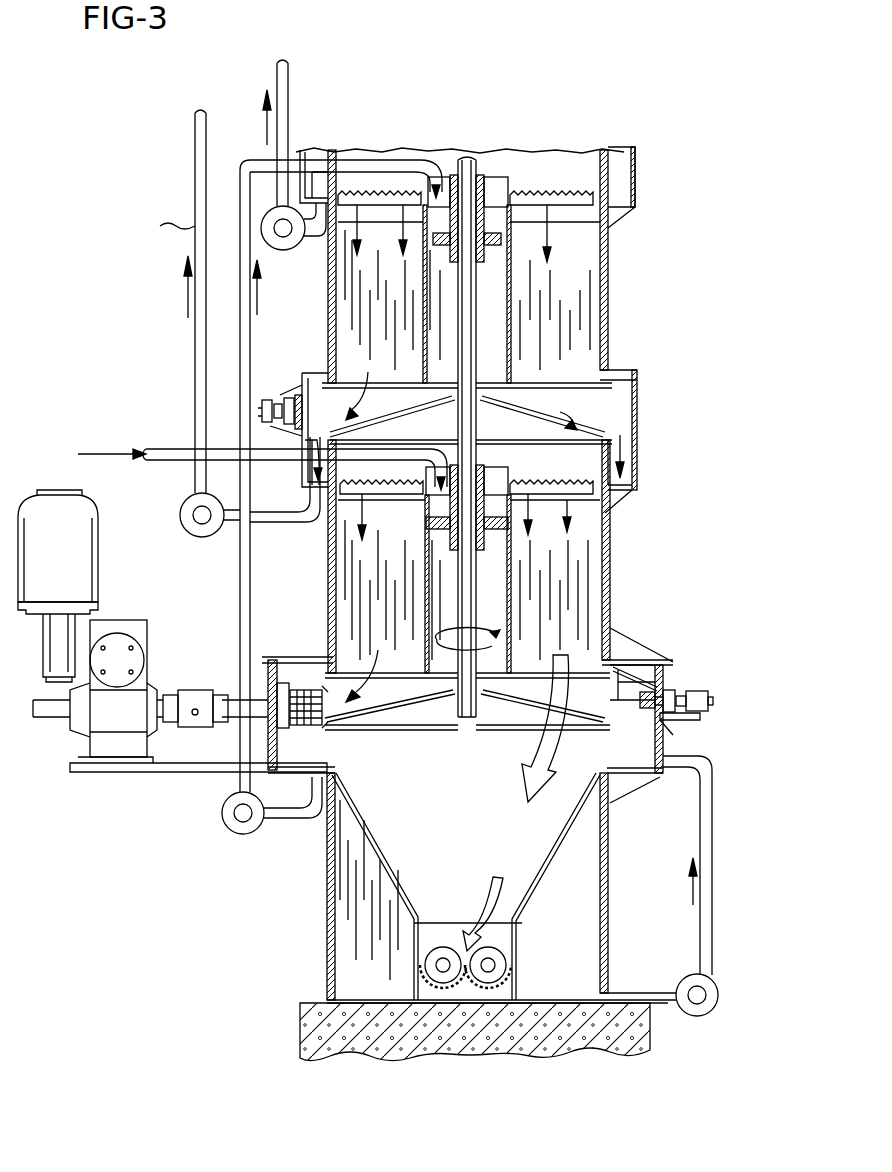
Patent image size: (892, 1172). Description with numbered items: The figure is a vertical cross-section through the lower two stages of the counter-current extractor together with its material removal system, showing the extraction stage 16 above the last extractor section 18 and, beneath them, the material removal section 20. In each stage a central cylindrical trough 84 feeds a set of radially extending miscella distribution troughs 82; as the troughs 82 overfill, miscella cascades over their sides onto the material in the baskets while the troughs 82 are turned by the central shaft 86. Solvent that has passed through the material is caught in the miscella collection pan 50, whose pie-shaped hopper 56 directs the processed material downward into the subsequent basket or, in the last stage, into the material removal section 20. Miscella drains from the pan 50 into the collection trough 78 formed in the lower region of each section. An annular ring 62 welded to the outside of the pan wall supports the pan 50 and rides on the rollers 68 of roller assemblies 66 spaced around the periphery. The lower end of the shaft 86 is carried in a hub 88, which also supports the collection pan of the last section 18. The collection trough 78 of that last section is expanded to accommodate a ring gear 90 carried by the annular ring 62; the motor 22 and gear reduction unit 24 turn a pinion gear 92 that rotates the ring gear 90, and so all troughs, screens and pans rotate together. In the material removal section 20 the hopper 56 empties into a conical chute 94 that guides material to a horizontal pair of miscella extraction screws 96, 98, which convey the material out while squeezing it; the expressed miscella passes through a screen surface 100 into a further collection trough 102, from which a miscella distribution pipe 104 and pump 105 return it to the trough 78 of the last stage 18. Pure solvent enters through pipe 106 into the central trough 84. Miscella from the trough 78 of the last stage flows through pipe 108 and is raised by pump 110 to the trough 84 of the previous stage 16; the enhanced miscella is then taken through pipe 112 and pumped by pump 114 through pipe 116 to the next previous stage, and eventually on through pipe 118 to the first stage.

The extraction stage 16 is at (664, 259).
The last extractor section 18 is at (610, 560).
The material removal section 20 is at (610, 900).
The motor 22 is at (66, 560).
The gear reduction unit 24 is at (97, 724).
The miscella collection pan 50 is at (602, 410).
The hopper 56 is at (591, 692).
The annular ring 62 is at (623, 683).
The roller assembly 66 is at (698, 693).
The roller 68 is at (295, 403).
The collection trough 78 is at (625, 428).
The miscella distribution trough 82 is at (550, 195).
The central cylindrical trough 84 is at (493, 176).
The central shaft 86 is at (468, 600).
The hub 88 is at (453, 720).
The ring gear 90 is at (623, 700).
The pinion gear 92 is at (316, 728).
The conical chute 94 is at (570, 830).
The miscella extraction screw 96 is at (440, 957).
The miscella extraction screw 98 is at (490, 963).
The screen surface 100 is at (513, 983).
The collection trough 102 is at (510, 1004).
The miscella distribution pipe 104 is at (669, 1000).
The pump 105 is at (685, 977).
The pipe 106 is at (151, 447).
The pipe 108 is at (368, 158).
The pump 110 is at (222, 827).
The pipe 112 is at (280, 522).
The pump 114 is at (180, 517).
The pipe 116 is at (191, 236).
The pipe 118 is at (276, 66).